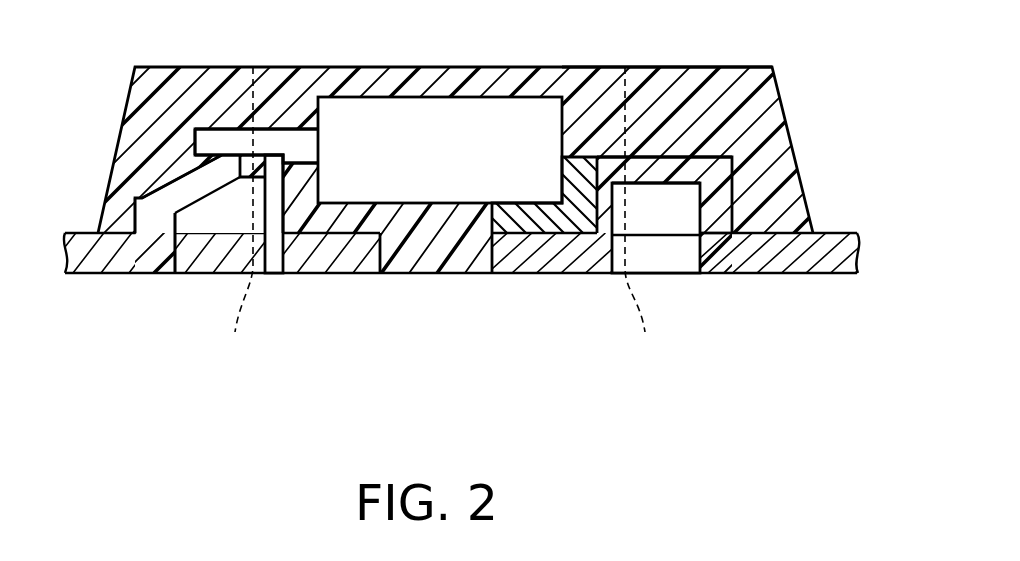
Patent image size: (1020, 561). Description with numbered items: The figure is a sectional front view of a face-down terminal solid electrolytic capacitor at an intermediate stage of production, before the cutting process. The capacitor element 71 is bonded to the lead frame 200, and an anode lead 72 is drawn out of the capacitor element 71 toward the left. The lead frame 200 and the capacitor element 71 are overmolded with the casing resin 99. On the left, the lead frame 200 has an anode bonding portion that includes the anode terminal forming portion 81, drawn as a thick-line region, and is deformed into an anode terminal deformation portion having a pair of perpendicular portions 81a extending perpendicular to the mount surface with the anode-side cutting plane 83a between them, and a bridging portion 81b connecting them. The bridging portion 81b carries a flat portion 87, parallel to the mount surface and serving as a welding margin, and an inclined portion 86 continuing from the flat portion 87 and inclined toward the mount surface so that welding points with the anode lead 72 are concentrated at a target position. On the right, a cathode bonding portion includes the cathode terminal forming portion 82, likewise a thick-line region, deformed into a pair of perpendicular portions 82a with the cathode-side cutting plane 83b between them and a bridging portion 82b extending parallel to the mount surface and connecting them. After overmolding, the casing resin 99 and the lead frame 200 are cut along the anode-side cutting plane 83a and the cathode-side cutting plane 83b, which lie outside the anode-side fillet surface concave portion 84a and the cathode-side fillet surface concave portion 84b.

The capacitor element 71 is at (437, 113).
The anode lead 72 is at (297, 143).
The anode terminal forming portion 81 is at (123, 278).
The perpendicular portions 81a is at (88, 272).
The bridging portion 81b is at (154, 224).
The cathode terminal forming portion 82 is at (732, 278).
The perpendicular portions 82a is at (290, 215).
The bridging portion 82b is at (703, 178).
The anode-side cutting plane 83a is at (237, 214).
The cathode-side cutting plane 83b is at (651, 214).
The anode-side fillet surface concave portion 84a is at (280, 245).
The cathode-side fillet surface concave portion 84b is at (607, 250).
The inclined portion 86 is at (175, 178).
The flat portion 87 is at (184, 192).
The casing resin 99 is at (593, 107).
The lead frame 200 is at (837, 299).